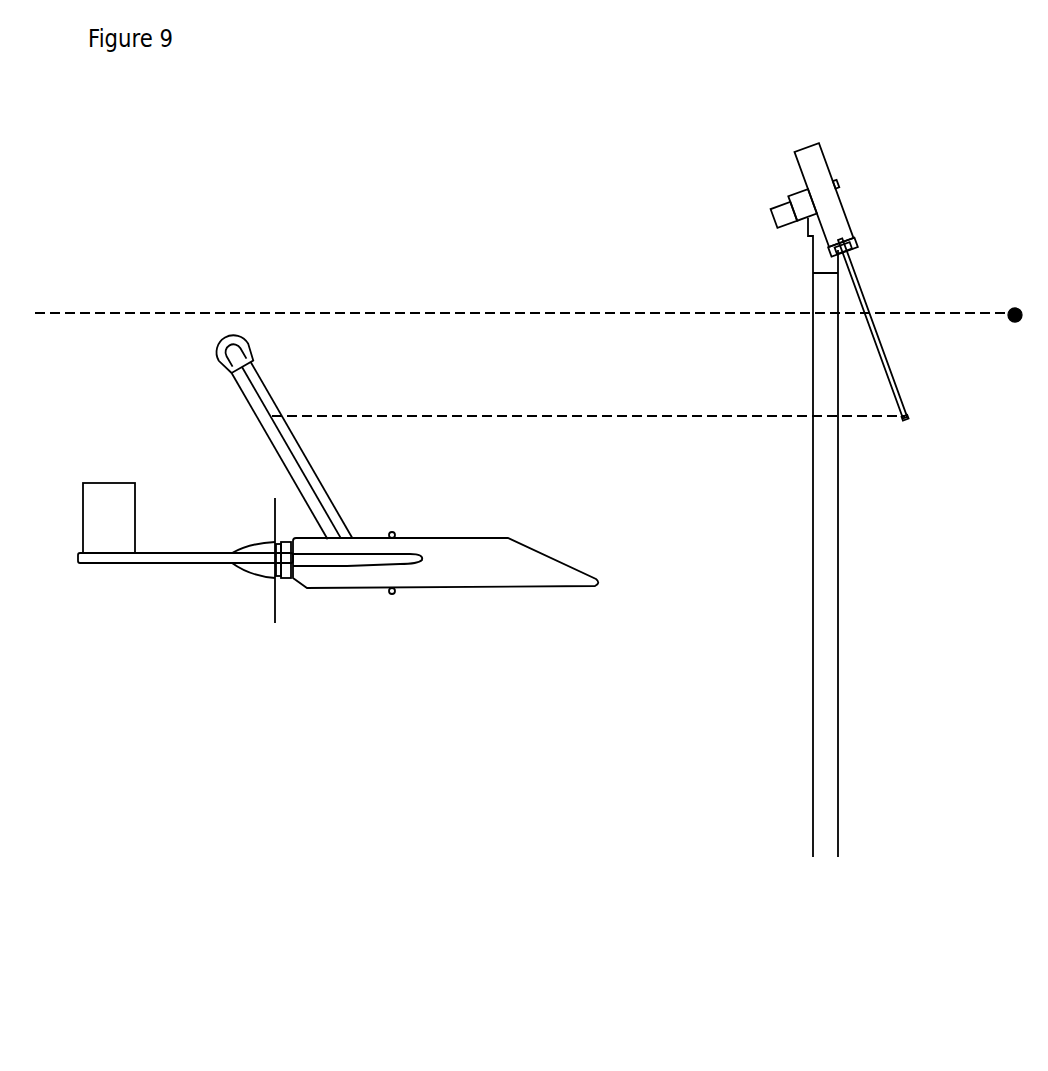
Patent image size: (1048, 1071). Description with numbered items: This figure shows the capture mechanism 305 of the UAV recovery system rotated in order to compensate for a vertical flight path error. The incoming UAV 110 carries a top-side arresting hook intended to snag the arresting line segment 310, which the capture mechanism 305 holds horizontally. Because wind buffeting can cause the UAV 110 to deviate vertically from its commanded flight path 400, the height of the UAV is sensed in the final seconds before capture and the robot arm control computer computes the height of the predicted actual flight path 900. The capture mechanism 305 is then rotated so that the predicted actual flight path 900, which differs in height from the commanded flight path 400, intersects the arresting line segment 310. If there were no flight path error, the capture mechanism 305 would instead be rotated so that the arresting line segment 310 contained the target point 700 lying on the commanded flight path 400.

The UAV 110 is at (457, 598).
The capture mechanism 305 is at (825, 127).
The arresting line segment 310 is at (917, 423).
The commanded flight path 400 is at (538, 423).
The target point 700 is at (1010, 303).
The predicted actual flight path 900 is at (513, 307).